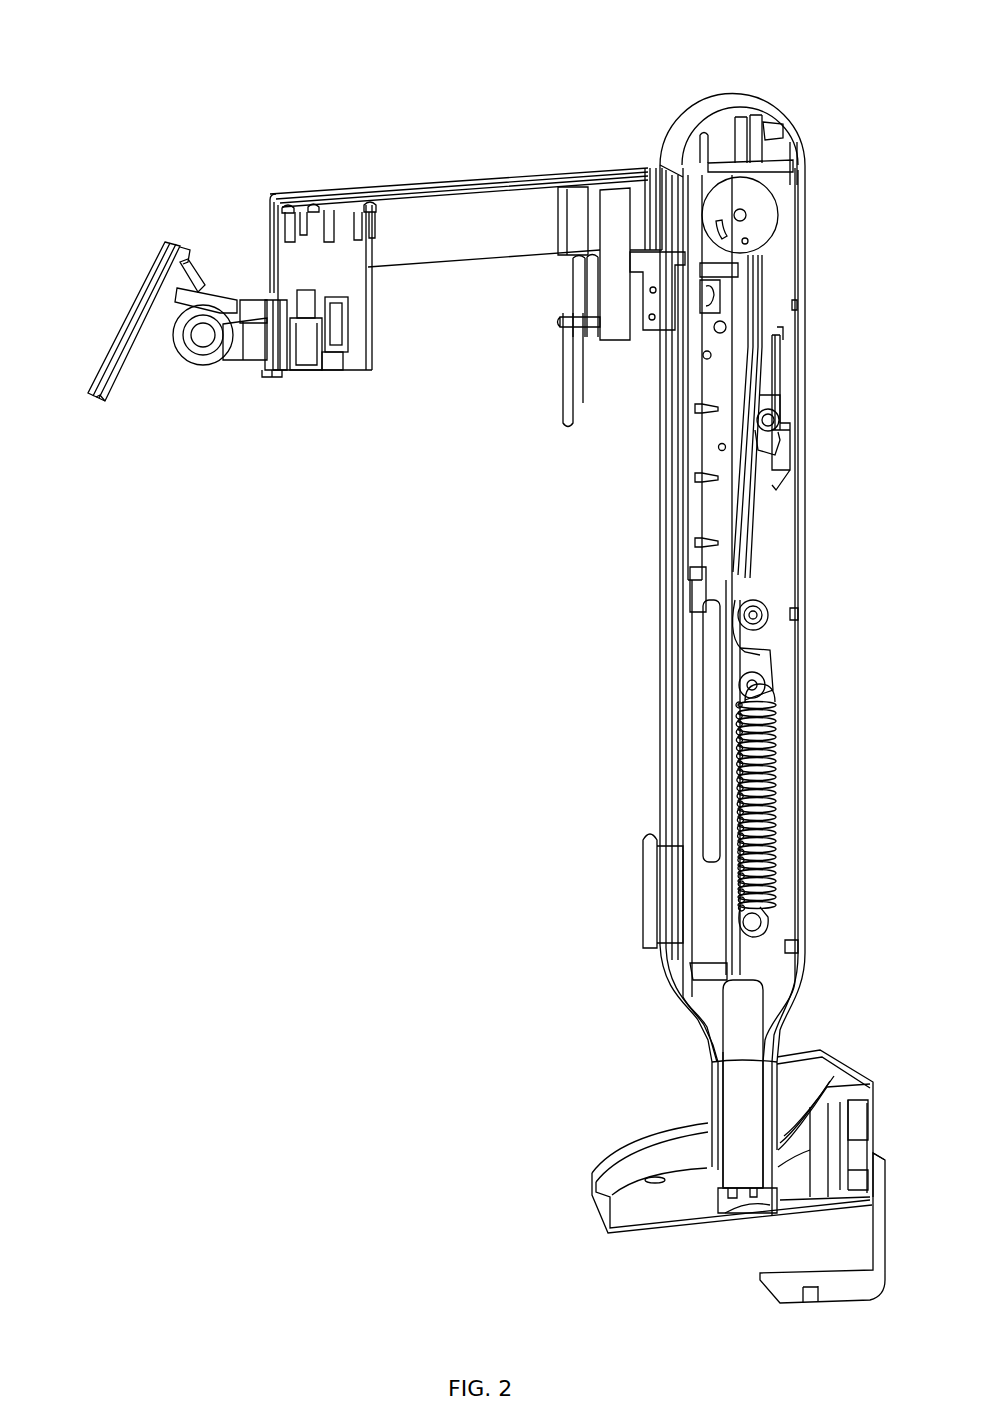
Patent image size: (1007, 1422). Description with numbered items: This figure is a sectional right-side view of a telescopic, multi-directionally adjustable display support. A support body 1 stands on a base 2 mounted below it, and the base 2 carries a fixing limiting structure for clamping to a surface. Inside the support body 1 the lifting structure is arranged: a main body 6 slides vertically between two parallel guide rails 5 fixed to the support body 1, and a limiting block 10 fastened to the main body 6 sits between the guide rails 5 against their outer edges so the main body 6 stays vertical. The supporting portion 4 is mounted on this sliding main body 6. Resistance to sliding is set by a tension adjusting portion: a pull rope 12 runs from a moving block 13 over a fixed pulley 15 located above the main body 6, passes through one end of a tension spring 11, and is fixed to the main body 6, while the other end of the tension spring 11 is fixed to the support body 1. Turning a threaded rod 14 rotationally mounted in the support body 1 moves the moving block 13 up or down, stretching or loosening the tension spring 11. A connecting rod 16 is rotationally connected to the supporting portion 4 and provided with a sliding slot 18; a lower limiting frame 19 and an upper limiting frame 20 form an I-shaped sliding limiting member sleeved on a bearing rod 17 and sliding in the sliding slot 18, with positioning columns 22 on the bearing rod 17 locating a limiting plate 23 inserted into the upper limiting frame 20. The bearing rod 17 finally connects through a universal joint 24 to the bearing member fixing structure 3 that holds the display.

The support body 1 is at (788, 660).
The base 2 is at (793, 1108).
The bearing member fixing structure 3 is at (145, 338).
The supporting portion 4 is at (635, 292).
The guide rail 5 is at (712, 793).
The main body 6 is at (718, 508).
The limiting block 10 is at (687, 562).
The tension spring 11 is at (773, 845).
The pull rope 12 is at (780, 465).
The moving block 13 is at (778, 362).
The threaded rod 14 is at (783, 208).
The fixed pulley 15 is at (797, 142).
The connecting rod 16 is at (445, 228).
The bearing rod 17 is at (333, 277).
The sliding slot 18 is at (534, 193).
The lower limiting frame 19 is at (270, 273).
The upper limiting frame 20 is at (370, 200).
The positioning column 22 is at (313, 205).
The limiting plate 23 is at (287, 207).
The universal joint 24 is at (238, 356).